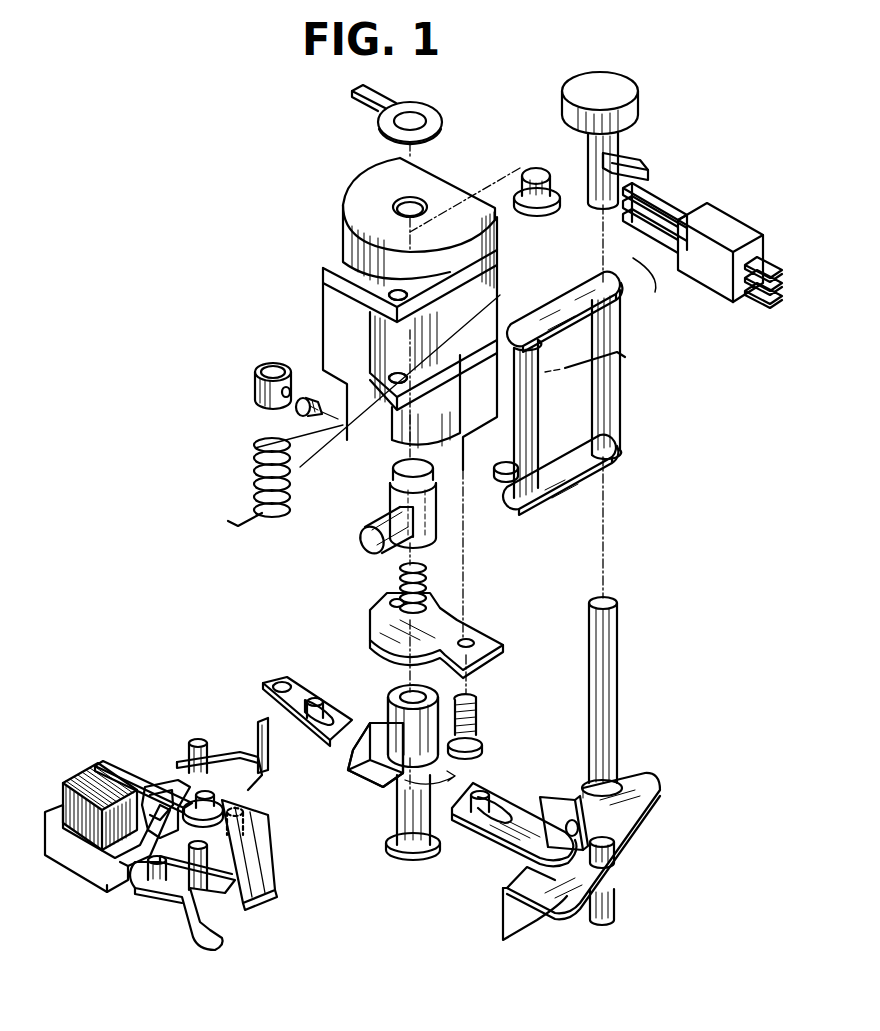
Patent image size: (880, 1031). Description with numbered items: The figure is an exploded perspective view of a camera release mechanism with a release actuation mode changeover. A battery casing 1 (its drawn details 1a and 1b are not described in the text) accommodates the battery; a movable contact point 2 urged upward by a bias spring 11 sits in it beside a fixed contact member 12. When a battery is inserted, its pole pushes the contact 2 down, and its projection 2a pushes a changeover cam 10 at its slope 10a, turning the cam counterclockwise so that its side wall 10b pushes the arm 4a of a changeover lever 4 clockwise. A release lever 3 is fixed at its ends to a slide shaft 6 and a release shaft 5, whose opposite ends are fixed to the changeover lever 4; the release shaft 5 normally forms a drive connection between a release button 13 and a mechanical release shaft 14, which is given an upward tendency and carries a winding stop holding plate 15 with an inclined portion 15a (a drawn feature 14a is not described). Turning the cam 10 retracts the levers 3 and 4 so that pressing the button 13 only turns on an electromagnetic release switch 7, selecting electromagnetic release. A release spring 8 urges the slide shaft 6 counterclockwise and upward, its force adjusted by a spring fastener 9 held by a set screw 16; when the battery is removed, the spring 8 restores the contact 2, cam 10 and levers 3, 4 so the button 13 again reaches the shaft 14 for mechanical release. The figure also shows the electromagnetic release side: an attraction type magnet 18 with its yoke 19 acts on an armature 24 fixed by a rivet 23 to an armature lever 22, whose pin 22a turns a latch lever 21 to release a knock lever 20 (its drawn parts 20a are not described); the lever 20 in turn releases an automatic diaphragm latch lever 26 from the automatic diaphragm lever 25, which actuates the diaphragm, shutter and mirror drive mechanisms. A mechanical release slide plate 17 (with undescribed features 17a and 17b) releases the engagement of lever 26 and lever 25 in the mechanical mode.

The battery casing 1 is at (355, 198).
The upper flange hole 1a is at (388, 298).
The lower flange hole 1b is at (397, 384).
The movable contact point 2 is at (436, 527).
The projection 2a is at (365, 527).
The release lever 3 is at (563, 298).
The changeover lever 4 is at (588, 488).
The arm 4a is at (504, 477).
The release shaft 5 is at (620, 425).
The slide shaft 6 is at (541, 512).
The electromagnetic release switch 7 is at (725, 230).
The release spring 8 is at (257, 489).
The spring fastener 9 is at (257, 392).
The changeover cam 10 is at (367, 762).
The slope 10a is at (372, 785).
The side wall 10b is at (400, 775).
The bias spring 11 is at (427, 606).
The fixed contact member 12 is at (541, 177).
The release button 13 is at (638, 109).
The mechanical release shaft 14 is at (615, 688).
The shaft pin 14a is at (602, 828).
The winding stop holding plate 15 is at (640, 830).
The inclined portion 15a is at (528, 927).
The set screw 16 is at (307, 398).
The mechanical release slide plate 17 is at (512, 842).
The tab 17a is at (567, 800).
The lever plate 17b is at (273, 707).
The electromagnetic release control attraction type magnet 18 is at (78, 791).
The magnet yoke 19 is at (97, 873).
The knock lever 20 is at (168, 903).
The pin 20a is at (198, 740).
The latch lever 21 is at (274, 852).
The armature lever 22 is at (186, 796).
The pin 22a is at (245, 815).
The rivet 23 is at (163, 785).
The armature 24 is at (112, 770).
The automatic diaphragm lever 25 is at (263, 904).
The automatic diaphragm latch lever 26 is at (238, 757).